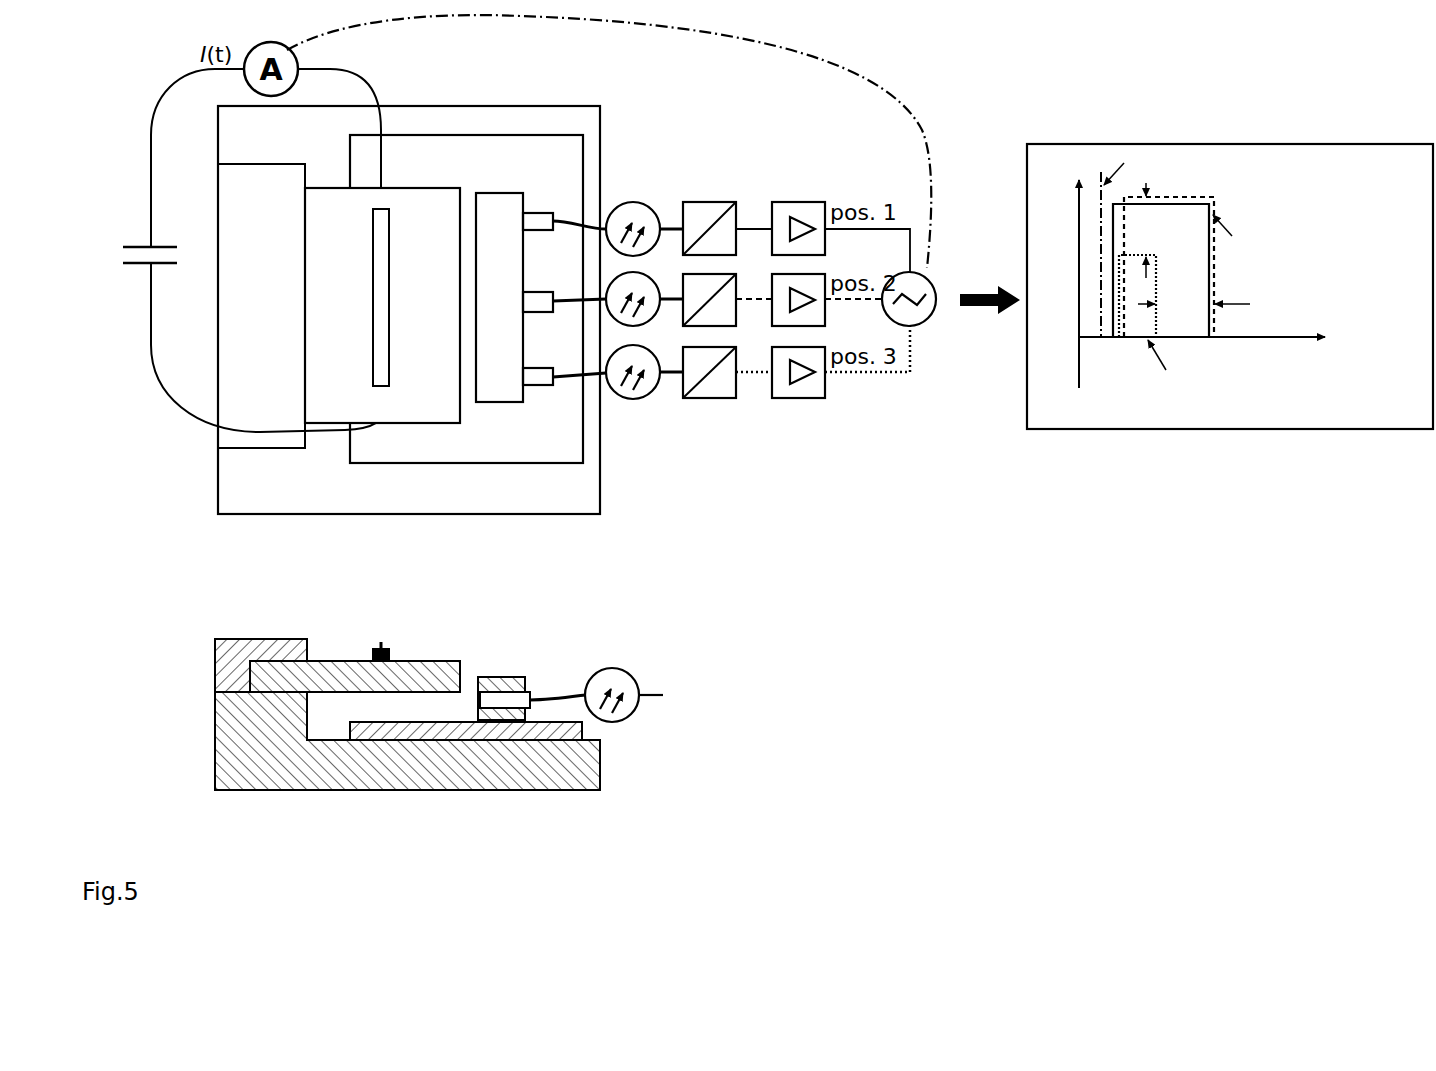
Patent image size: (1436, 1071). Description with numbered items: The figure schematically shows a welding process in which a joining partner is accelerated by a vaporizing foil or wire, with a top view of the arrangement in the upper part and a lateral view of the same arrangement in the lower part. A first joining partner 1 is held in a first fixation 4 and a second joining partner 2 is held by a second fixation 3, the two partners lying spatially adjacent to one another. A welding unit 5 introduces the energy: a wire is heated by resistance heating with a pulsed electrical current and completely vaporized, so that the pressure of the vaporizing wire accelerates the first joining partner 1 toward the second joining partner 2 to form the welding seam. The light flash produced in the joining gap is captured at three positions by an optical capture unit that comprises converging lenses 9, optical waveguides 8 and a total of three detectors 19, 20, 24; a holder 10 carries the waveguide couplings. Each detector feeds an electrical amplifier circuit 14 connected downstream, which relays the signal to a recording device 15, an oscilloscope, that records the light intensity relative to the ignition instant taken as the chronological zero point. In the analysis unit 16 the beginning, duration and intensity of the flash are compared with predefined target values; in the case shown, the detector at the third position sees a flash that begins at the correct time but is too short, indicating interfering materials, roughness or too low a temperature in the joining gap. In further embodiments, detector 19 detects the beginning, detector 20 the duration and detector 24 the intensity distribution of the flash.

The first joining partner 1 is at (334, 397).
The second joining partner 2 is at (451, 439).
The second fixation 3 is at (393, 791).
The first fixation 4 is at (216, 385).
The welding unit 5 is at (386, 389).
The optical waveguides 8 is at (654, 250).
The converging lenses 9 is at (546, 234).
The light guide holder 10 is at (500, 400).
The electrical amplifier circuit 14 is at (793, 259).
The recording device 15 is at (921, 325).
The analysis unit 16 is at (1106, 432).
The detector 19 is at (708, 400).
The detector 20 is at (710, 326).
The detector 24 is at (717, 258).